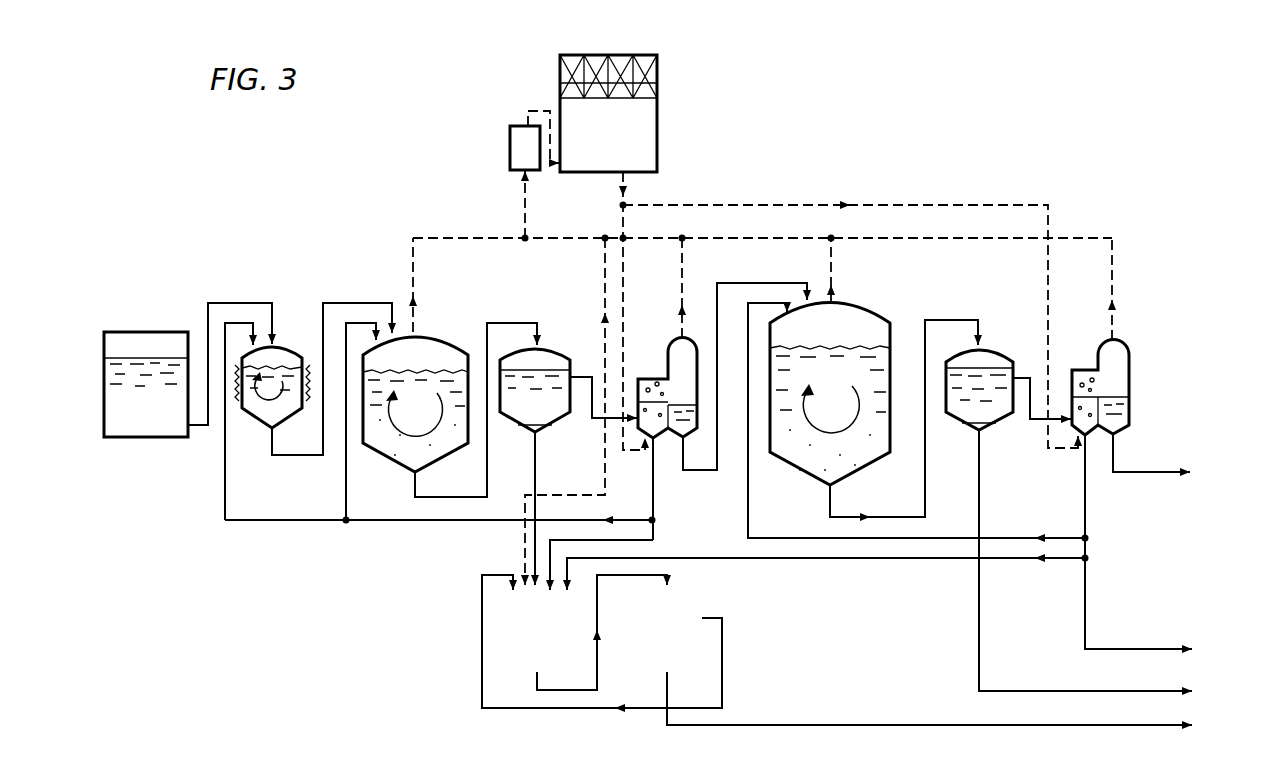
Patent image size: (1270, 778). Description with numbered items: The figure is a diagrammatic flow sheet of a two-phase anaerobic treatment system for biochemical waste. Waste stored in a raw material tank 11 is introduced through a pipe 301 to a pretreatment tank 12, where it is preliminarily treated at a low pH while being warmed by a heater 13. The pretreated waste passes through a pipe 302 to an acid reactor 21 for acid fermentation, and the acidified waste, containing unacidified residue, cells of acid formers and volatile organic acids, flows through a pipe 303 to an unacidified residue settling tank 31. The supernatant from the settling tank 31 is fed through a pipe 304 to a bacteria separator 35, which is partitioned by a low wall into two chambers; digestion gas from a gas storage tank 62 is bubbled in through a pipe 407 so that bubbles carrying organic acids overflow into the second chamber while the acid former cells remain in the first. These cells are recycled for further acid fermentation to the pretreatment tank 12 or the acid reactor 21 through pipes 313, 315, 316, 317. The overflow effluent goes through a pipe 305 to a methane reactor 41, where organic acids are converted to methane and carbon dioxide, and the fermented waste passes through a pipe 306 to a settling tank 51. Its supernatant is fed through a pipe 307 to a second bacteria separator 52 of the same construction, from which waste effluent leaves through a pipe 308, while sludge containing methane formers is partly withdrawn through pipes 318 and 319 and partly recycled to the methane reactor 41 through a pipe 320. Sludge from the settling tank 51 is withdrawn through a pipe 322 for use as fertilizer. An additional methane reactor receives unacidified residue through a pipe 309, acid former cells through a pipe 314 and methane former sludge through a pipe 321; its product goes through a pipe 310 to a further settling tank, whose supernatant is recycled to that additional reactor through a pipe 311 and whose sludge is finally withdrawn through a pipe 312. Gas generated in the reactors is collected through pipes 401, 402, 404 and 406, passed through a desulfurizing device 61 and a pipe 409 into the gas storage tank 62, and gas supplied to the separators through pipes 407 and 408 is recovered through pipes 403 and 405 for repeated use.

The raw material tank 11 is at (132, 330).
The pretreatment tank 12 is at (288, 352).
The heater 13 is at (240, 410).
The acid reactor 21 is at (428, 338).
The unacidified residue settling tank 31 is at (548, 355).
The bacteria separator 35 is at (668, 346).
The methane reactor 41 is at (865, 312).
The settling tank 51 is at (990, 352).
The bacteria separator 52 is at (1130, 352).
The desulfurizing device 61 is at (510, 140).
The gas storage tank 62 is at (657, 108).
The pipe 301 is at (242, 300).
The pipe 302 is at (372, 300).
The pipe 303 is at (515, 312).
The pipe 304 is at (592, 418).
The pipe 305 is at (762, 283).
The pipe 306 is at (940, 320).
The pipe 307 is at (1030, 420).
The pipe 308 is at (1140, 472).
The pipe 309 is at (537, 476).
The pipe 310 is at (597, 680).
The pipe 311 is at (725, 662).
The pipe 312 is at (820, 725).
The pipe 313 is at (655, 500).
The pipe 314 is at (655, 540).
The pipe 315 is at (415, 522).
The pipe 316 is at (345, 490).
The pipe 317 is at (224, 506).
The pipe 318 is at (1085, 510).
The pipe 319 is at (1087, 588).
The pipe 320 is at (750, 520).
The pipe 321 is at (820, 558).
The pipe 322 is at (978, 622).
The pipe 401 is at (413, 240).
The pipe 402 is at (605, 258).
The pipe 403 is at (683, 246).
The pipe 404 is at (832, 258).
The pipe 405 is at (1113, 258).
The pipe 406 is at (528, 200).
The pipe 407 is at (623, 275).
The pipe 408 is at (1048, 258).
The pipe 409 is at (540, 111).